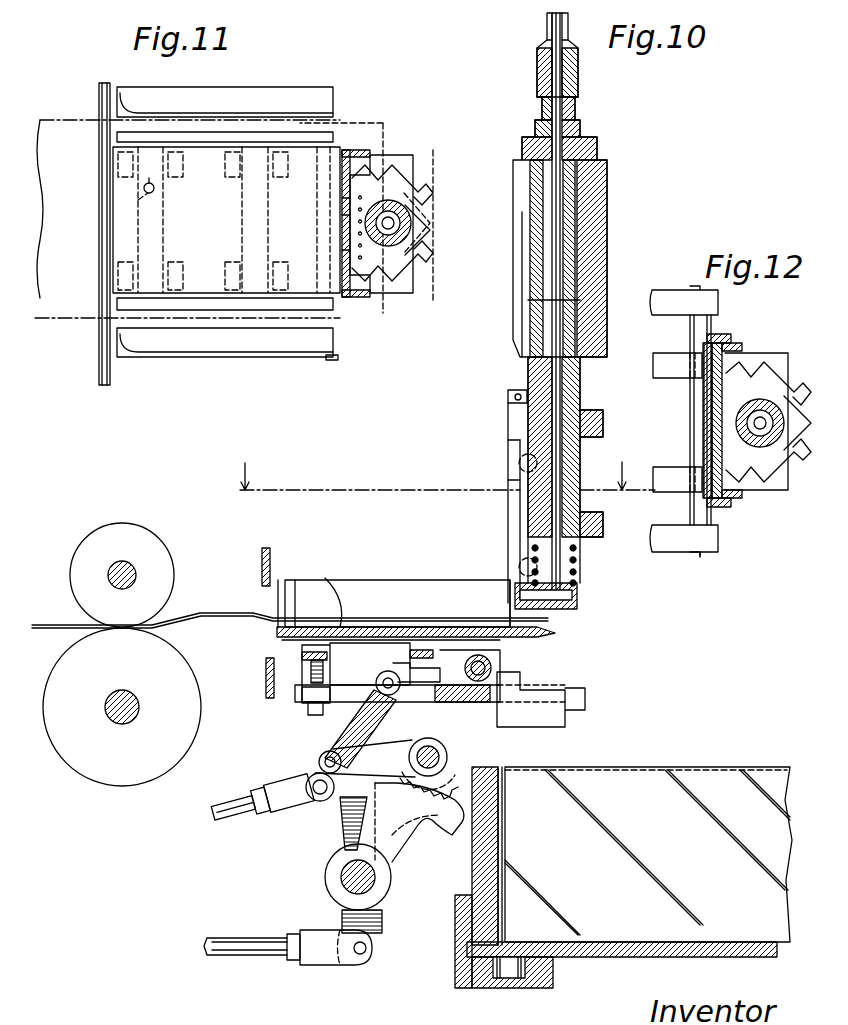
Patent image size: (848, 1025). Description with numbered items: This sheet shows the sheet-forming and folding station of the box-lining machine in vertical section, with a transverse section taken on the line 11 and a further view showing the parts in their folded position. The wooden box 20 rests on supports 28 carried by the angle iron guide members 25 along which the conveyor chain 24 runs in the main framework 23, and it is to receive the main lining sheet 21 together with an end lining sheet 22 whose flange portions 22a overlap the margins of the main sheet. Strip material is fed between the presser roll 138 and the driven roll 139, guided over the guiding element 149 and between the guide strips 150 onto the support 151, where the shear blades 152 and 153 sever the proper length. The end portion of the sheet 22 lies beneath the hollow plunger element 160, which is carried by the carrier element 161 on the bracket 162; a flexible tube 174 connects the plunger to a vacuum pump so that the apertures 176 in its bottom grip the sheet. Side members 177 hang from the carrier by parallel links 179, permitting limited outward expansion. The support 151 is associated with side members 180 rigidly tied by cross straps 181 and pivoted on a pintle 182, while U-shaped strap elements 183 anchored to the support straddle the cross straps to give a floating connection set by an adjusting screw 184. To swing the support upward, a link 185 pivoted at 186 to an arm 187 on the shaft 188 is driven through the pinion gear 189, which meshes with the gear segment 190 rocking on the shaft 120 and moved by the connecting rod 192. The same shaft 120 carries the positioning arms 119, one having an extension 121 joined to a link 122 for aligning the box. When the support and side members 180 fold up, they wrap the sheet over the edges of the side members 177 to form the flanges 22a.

In FIG. 10, the section line 11 is at (446, 464).
In FIG. 10, the wooden box 20 is at (666, 952).
In FIG. 10, the lining sheet 21 is at (720, 790).
In FIG. 12, the end lining sheet 22 is at (712, 408).
In FIG. 10, the end lining sheet 22 is at (280, 622).
In FIG. 12, the flange portions 22a is at (730, 347).
In FIG. 10, the main framework 23 is at (458, 703).
In FIG. 10, the conveyor chain 24 is at (512, 978).
In FIG. 10, the angle iron guide members 25 is at (463, 988).
In FIG. 10, the supports 28 is at (553, 978).
In FIG. 10, the arms 119 is at (340, 820).
In FIG. 10, the shaft 120 is at (340, 877).
In FIG. 10, the extension 121 is at (342, 918).
In FIG. 10, the link 122 is at (238, 950).
In FIG. 10, the presser roll 138 is at (85, 548).
In FIG. 10, the driven roll 139 is at (87, 770).
In FIG. 10, the guiding element 149 is at (195, 626).
In FIG. 11, the guide strips 150 is at (268, 108).
In FIG. 12, the guide strips 150 is at (668, 296).
In FIG. 11, the support 151 is at (306, 162).
In FIG. 12, the support 151 is at (708, 425).
In FIG. 10, the support 151 is at (380, 627).
In FIG. 11, the shear blade 152 is at (99, 362).
In FIG. 10, the shear blade 152 is at (270, 565).
In FIG. 11, the shear blade 153 is at (109, 372).
In FIG. 10, the shear blade 153 is at (266, 675).
In FIG. 11, the plunger element 160 is at (406, 160).
In FIG. 12, the plunger element 160 is at (756, 421).
In FIG. 10, the plunger element 160 is at (580, 600).
In FIG. 11, the carrier element 161 is at (412, 224).
In FIG. 12, the carrier element 161 is at (737, 430).
In FIG. 10, the carrier element 161 is at (535, 338).
In FIG. 10, the bracket 162 is at (590, 238).
In FIG. 10, the flexible tube 174 is at (547, 22).
In FIG. 11, the apertures 176 is at (345, 214).
In FIG. 10, the apertures 176 is at (530, 610).
In FIG. 11, the side members 177 is at (345, 198).
In FIG. 12, the side members 177 is at (706, 392).
In FIG. 11, the links 179 is at (405, 181).
In FIG. 12, the links 179 is at (776, 375).
In FIG. 10, the links 179 is at (570, 440).
In FIG. 11, the side members 180 is at (188, 134).
In FIG. 12, the side members 180 is at (728, 336).
In FIG. 10, the side members 180 is at (368, 590).
In FIG. 11, the cross straps 181 is at (242, 229).
In FIG. 12, the cross straps 181 is at (700, 468).
In FIG. 10, the cross straps 181 is at (300, 660).
In FIG. 11, the pintle 182 is at (330, 358).
In FIG. 12, the pintle 182 is at (697, 558).
In FIG. 10, the pintle 182 is at (492, 667).
In FIG. 11, the U-shaped strap elements 183 is at (237, 177).
In FIG. 12, the U-shaped strap elements 183 is at (668, 360).
In FIG. 10, the U-shaped strap elements 183 is at (302, 660).
In FIG. 11, the adjusting screw 184 is at (142, 194).
In FIG. 10, the adjusting screw 184 is at (310, 672).
In FIG. 10, the link 185 is at (345, 718).
In FIG. 10, the pivot 186 is at (318, 762).
In FIG. 10, the arm 187 is at (380, 745).
In FIG. 10, the shaft 188 is at (440, 750).
In FIG. 10, the pinion gear 189 is at (440, 786).
In FIG. 10, the gear segment 190 is at (440, 830).
In FIG. 10, the connecting rod 192 is at (222, 815).